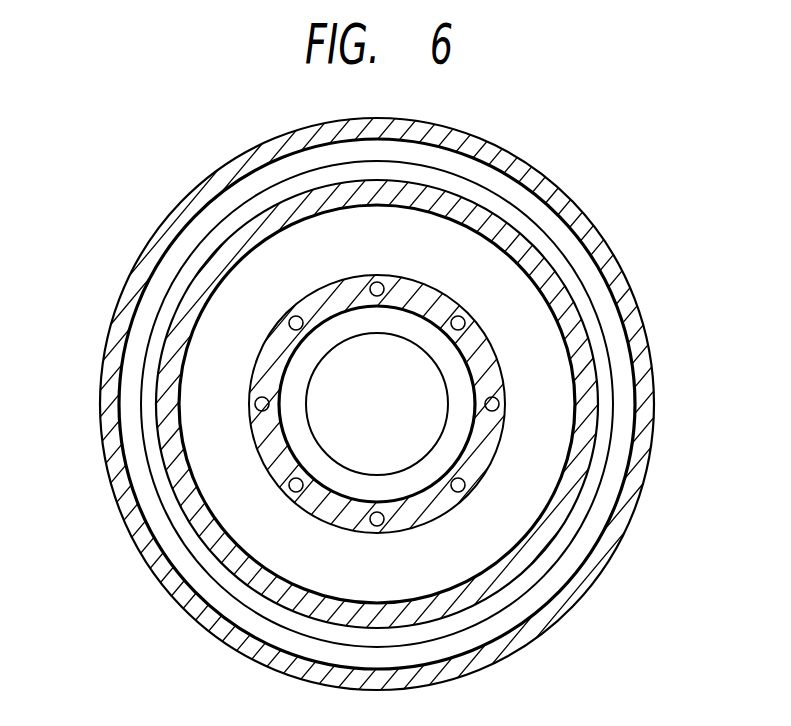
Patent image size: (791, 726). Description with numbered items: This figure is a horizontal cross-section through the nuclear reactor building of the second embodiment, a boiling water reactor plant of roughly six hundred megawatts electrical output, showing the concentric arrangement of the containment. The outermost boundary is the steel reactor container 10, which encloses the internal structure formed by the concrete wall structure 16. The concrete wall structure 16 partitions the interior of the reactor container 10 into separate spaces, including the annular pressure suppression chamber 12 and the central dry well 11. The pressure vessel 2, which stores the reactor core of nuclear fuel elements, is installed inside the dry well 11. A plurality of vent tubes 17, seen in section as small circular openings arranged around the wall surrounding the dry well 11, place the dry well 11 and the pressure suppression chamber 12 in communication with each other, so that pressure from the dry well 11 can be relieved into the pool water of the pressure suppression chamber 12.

The reactor container 10 is at (604, 340).
The concrete wall structure 16 is at (165, 386).
The pressure suppression chamber 12 is at (305, 573).
The dry well 11 is at (448, 451).
The pressure vessel 2 is at (438, 367).
The vent tube 17 is at (292, 493).